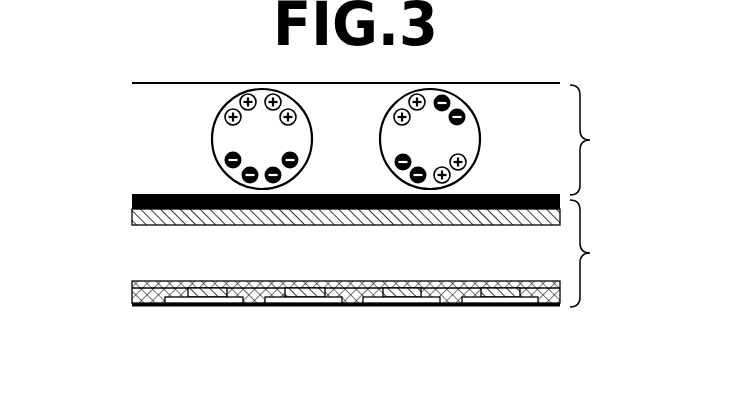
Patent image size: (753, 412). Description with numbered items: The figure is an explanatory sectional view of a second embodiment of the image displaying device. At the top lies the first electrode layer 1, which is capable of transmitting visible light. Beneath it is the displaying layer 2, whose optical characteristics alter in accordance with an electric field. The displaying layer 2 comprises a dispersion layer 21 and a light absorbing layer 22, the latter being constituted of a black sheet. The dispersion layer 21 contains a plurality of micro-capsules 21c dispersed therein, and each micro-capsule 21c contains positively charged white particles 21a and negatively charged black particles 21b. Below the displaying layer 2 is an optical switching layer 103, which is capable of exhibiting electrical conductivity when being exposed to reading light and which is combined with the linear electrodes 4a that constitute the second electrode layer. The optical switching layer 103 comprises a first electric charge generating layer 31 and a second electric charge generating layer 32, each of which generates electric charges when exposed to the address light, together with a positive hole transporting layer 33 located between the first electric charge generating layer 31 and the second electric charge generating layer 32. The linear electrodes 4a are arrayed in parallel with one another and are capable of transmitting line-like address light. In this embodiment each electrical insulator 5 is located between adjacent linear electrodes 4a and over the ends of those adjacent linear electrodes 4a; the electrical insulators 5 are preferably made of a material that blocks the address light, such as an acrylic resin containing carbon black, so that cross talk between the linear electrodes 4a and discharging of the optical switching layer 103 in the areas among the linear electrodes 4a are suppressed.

The first electrode layer 1 is at (536, 82).
The displaying layer 2 is at (591, 140).
The dispersion layer 21 is at (141, 137).
The positively charged white particles 21a is at (296, 103).
The negatively charged black particles 21b is at (297, 157).
The micro-capsule 21c is at (214, 122).
The light absorbing layer 22 is at (132, 202).
The first electric charge generating layer 31 is at (132, 217).
The second electric charge generating layer 32 is at (133, 283).
The positive hole transporting layer 33 is at (141, 257).
The linear electrode 4a is at (207, 303).
The electrical insulator 5 is at (351, 306).
The optical switching layer 103 is at (607, 253).